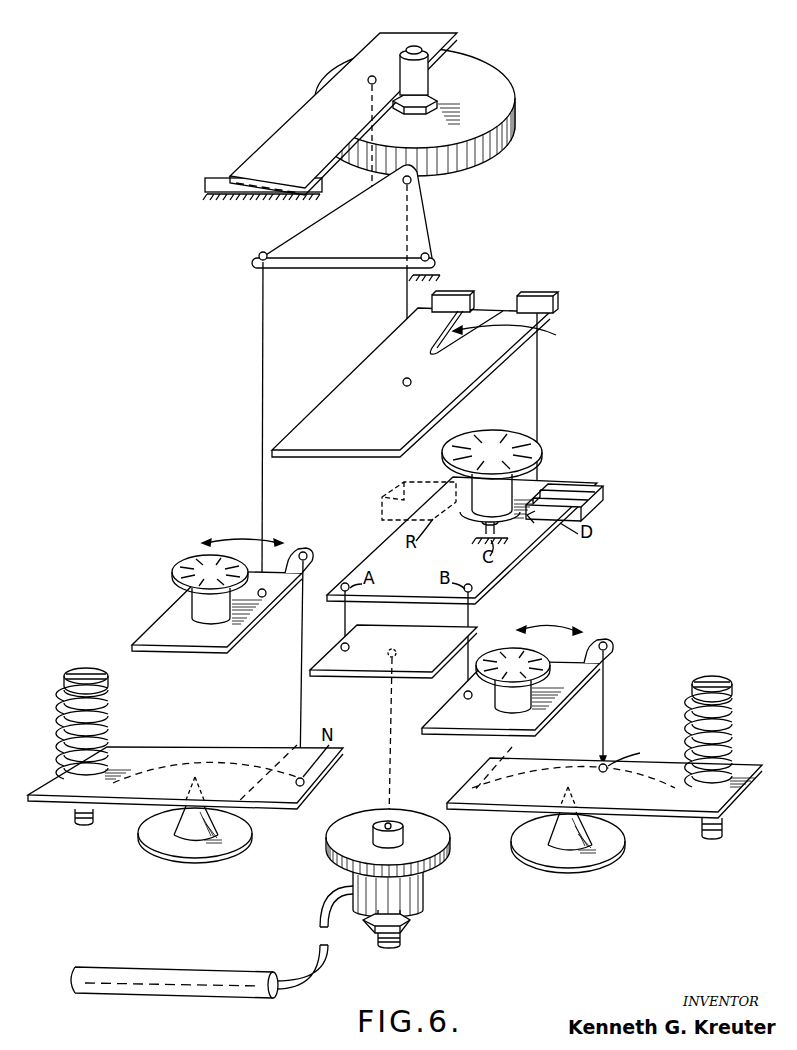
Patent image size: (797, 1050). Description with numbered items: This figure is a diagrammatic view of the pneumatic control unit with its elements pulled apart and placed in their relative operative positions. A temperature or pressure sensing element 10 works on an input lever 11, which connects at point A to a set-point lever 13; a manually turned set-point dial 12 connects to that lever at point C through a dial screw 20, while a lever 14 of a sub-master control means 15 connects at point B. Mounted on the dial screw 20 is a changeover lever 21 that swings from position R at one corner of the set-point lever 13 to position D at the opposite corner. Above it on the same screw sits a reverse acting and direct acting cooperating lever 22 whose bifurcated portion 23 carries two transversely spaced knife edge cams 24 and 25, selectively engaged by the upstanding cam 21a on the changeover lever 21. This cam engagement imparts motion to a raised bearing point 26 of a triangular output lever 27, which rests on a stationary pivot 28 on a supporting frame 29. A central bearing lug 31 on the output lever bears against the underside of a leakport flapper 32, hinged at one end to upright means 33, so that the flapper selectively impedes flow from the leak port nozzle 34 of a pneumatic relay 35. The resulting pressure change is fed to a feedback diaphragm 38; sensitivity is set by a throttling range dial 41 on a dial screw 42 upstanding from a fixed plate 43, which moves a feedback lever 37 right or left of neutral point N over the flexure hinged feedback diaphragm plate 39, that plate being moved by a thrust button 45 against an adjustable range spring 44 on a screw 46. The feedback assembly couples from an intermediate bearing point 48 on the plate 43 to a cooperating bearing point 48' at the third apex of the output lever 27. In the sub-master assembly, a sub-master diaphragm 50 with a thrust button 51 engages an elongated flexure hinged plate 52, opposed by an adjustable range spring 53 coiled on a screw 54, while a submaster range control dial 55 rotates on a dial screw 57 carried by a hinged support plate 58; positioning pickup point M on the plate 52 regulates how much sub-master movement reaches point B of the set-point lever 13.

The temperature or pressure sensing element 10 is at (425, 887).
The input lever 11 is at (358, 680).
The set-point dial 12 is at (522, 446).
The set-point lever 13 is at (500, 566).
The sub-master set-point lever 14 is at (601, 641).
The sub-master control means 15 is at (610, 772).
The dial screw 20 is at (537, 525).
The changeover lever 21 is at (572, 487).
The upstanding cam 21a is at (548, 495).
The reverse acting and direct acting cooperating lever 22 is at (468, 372).
The bifurcated portion 23 is at (502, 332).
The knife edge cam 24 is at (465, 302).
The knife edge cam 25 is at (556, 314).
The raised bearing point 26 is at (413, 181).
The triangular output lever 27 is at (428, 223).
The stationary pivot 28 is at (436, 252).
The supporting frame 29 is at (431, 258).
The bearing lug 31 is at (368, 230).
The leakport flapper 32 is at (420, 38).
The upright means 33 is at (208, 181).
The leak port nozzle 34 is at (432, 80).
The pneumatic relay 35 is at (495, 74).
The feedback lever 37 is at (307, 551).
The feedback diaphragm 38 is at (150, 852).
The feedback diaphragm plate 39 is at (150, 758).
The throttling range dial 41 is at (188, 569).
The dial screw 42 is at (195, 604).
The fixed plate 43 is at (235, 648).
The adjustable range spring 44 is at (108, 732).
The thrust button 45 is at (186, 828).
The screw 46 is at (76, 668).
The intermediate bearing point 48 is at (275, 613).
The cooperating bearing point 48' is at (240, 420).
The sub-master diaphragm 50 is at (622, 858).
The thrust button 51 is at (590, 832).
The flexure hinged plate 52 is at (545, 775).
The adjustable range spring 53 is at (733, 734).
The screw 54 is at (733, 690).
The submaster range control dial 55 is at (511, 648).
The dial screw 57 is at (492, 706).
The hinged support plate 58 is at (556, 708).